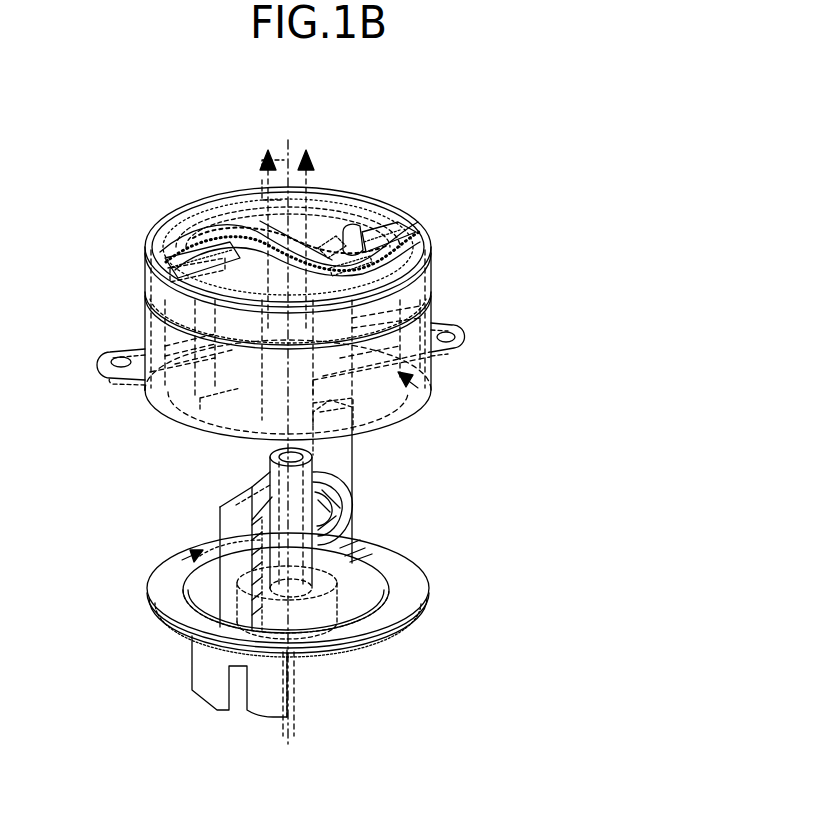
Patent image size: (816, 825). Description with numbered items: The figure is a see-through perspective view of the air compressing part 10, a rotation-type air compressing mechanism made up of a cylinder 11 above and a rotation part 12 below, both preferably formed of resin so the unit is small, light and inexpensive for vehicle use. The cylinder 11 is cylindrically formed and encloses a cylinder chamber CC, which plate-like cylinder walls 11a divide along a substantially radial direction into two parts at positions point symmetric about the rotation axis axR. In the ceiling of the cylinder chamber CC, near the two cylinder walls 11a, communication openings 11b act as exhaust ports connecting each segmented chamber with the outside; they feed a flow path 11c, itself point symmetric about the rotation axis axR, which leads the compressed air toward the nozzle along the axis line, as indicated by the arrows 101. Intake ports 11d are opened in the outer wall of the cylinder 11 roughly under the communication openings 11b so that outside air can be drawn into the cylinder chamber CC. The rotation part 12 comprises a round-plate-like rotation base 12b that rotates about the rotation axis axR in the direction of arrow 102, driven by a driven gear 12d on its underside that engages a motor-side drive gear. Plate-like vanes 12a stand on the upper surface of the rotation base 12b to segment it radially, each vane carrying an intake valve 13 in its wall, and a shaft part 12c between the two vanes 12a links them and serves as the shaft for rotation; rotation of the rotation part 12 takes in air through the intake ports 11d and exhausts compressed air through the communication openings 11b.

The air compressing part 10 is at (482, 149).
The cylinder 11 is at (455, 268).
The cylinder walls 11a is at (203, 432).
The communication openings 11b is at (396, 232).
The flow path 11c is at (200, 218).
The intake ports 11d is at (143, 396).
The rotation part 12 is at (432, 546).
The vanes 12a is at (240, 483).
The rotation base 12b is at (414, 578).
The shaft part 12c is at (258, 457).
The driven gear 12d is at (392, 623).
The intake valve 13 is at (208, 547).
The arrows 101 is at (332, 248).
The arrow 102 is at (182, 560).
The cylinder chamber CC is at (433, 384).
The rotation axis axR is at (287, 429).